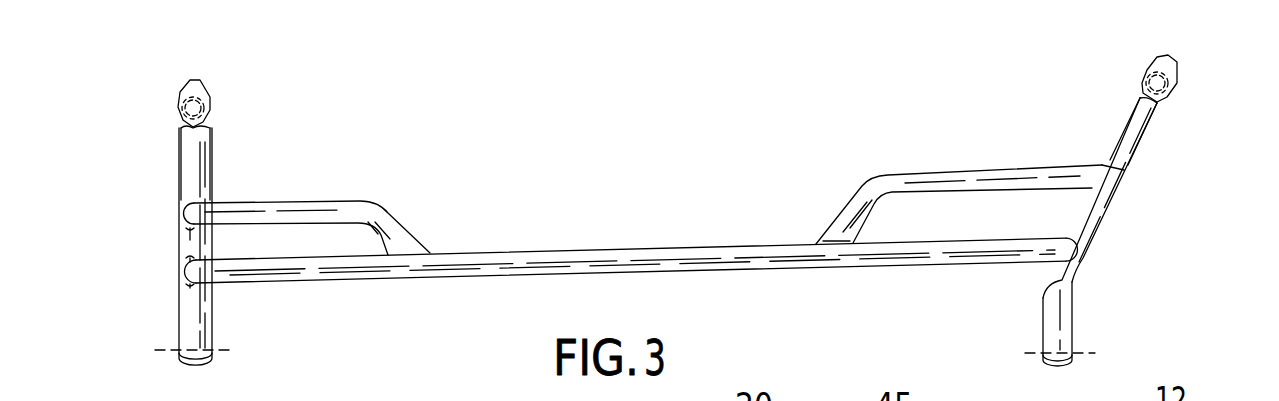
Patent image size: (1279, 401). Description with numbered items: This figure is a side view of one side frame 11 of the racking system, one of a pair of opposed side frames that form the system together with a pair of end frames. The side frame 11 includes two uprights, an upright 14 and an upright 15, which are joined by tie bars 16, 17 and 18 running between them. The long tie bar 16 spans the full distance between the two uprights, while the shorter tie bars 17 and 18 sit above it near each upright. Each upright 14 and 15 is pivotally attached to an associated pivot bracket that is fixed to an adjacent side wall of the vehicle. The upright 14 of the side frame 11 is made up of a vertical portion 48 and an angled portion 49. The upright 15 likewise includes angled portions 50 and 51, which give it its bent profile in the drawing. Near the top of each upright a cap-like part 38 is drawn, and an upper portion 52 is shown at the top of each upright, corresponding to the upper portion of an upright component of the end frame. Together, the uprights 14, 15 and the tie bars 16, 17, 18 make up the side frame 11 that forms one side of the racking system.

The side frame 11 is at (706, 211).
The upright 14 is at (166, 210).
The upright 15 is at (1100, 250).
The tie bar 16 is at (755, 254).
The tie bar 17 is at (315, 208).
The tie bar 18 is at (935, 180).
The knob 38 is at (197, 91).
The vertical portion 48 is at (190, 241).
The angled portion 49 is at (190, 313).
The angled portion 50 is at (1092, 201).
The angled portion 51 is at (1056, 305).
The upper portion 52 is at (185, 155).